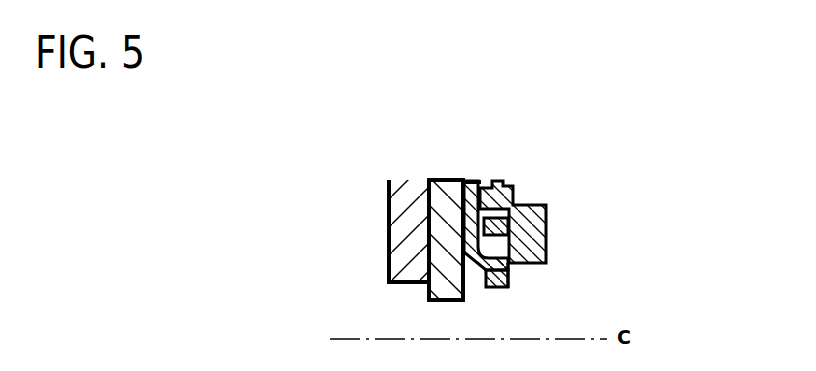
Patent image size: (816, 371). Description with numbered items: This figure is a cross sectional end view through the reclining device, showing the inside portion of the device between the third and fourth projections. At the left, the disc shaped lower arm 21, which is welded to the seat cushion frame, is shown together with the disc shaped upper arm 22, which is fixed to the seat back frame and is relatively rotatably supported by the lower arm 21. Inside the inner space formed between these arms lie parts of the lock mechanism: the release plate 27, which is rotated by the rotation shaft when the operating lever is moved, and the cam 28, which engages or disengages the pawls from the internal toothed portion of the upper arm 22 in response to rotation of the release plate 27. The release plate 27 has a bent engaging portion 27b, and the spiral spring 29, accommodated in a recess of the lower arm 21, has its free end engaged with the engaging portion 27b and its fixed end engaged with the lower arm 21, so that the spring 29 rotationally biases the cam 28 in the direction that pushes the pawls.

The lower arm 21 is at (541, 206).
The upper arm 22 is at (392, 217).
The release plate 27 is at (467, 181).
The engaging portion 27b is at (500, 242).
The cam 28 is at (428, 292).
The spring 29 is at (490, 220).